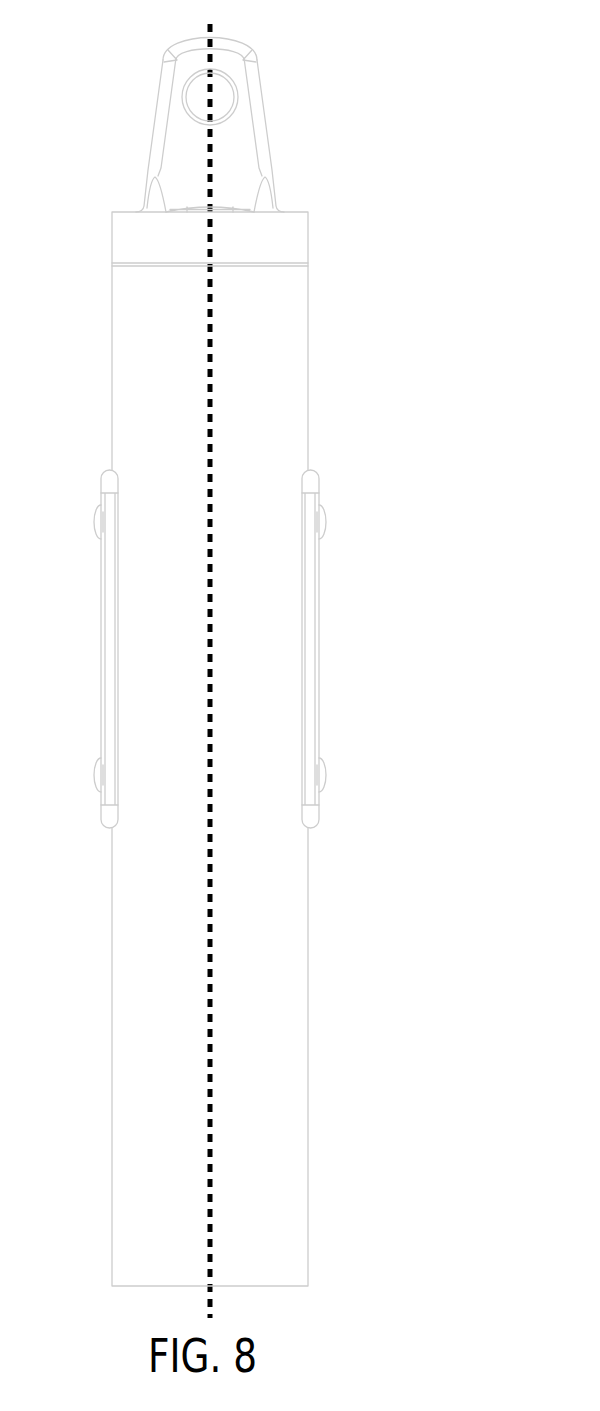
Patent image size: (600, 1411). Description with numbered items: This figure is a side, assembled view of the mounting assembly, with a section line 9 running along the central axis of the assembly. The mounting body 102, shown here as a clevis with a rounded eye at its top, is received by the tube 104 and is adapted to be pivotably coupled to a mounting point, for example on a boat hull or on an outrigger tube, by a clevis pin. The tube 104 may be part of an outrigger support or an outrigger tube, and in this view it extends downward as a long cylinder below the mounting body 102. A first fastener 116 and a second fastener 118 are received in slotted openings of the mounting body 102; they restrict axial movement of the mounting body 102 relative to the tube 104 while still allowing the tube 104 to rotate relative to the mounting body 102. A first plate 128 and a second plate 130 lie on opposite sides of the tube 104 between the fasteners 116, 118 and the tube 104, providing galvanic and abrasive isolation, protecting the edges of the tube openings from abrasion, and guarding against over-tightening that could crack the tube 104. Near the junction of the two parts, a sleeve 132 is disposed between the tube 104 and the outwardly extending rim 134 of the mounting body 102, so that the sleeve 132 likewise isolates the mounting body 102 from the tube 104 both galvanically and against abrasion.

The section line 9- 9 is at (210, 22).
The mounting body 102 is at (152, 152).
The tube 104 is at (298, 948).
The first fastener 116 is at (102, 527).
The second fastener 118 is at (98, 778).
The first plate 128 is at (112, 652).
The second plate 130 is at (309, 665).
The sleeve 132 is at (290, 266).
The outwardly extending rim 134 is at (283, 232).